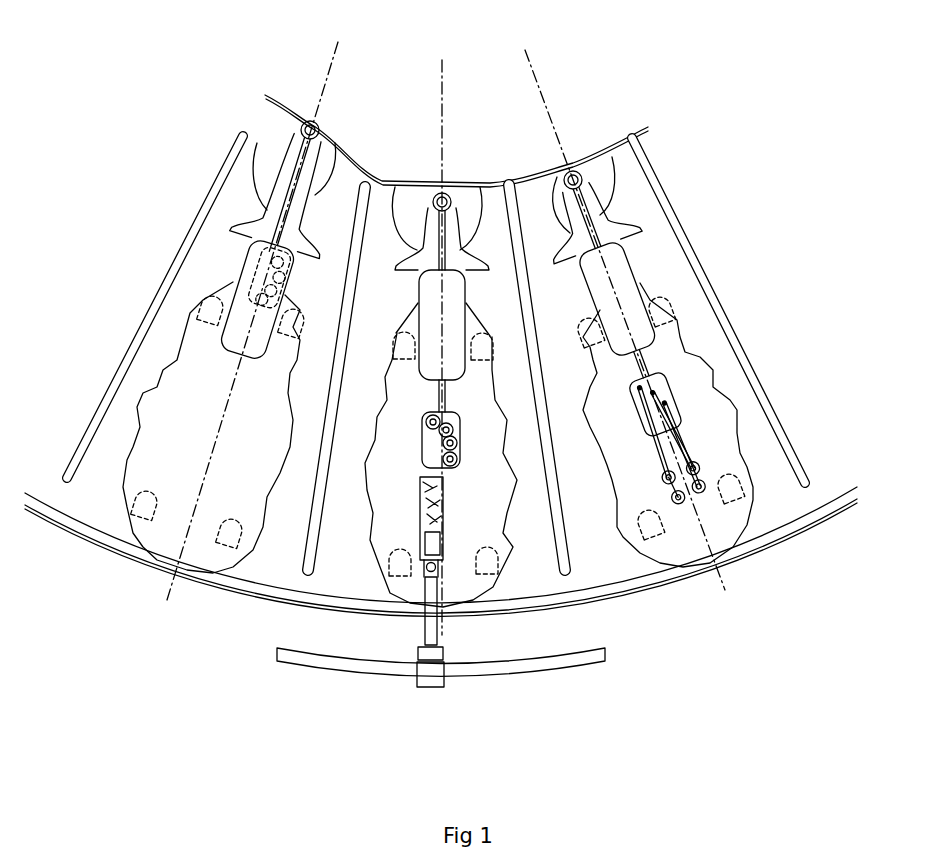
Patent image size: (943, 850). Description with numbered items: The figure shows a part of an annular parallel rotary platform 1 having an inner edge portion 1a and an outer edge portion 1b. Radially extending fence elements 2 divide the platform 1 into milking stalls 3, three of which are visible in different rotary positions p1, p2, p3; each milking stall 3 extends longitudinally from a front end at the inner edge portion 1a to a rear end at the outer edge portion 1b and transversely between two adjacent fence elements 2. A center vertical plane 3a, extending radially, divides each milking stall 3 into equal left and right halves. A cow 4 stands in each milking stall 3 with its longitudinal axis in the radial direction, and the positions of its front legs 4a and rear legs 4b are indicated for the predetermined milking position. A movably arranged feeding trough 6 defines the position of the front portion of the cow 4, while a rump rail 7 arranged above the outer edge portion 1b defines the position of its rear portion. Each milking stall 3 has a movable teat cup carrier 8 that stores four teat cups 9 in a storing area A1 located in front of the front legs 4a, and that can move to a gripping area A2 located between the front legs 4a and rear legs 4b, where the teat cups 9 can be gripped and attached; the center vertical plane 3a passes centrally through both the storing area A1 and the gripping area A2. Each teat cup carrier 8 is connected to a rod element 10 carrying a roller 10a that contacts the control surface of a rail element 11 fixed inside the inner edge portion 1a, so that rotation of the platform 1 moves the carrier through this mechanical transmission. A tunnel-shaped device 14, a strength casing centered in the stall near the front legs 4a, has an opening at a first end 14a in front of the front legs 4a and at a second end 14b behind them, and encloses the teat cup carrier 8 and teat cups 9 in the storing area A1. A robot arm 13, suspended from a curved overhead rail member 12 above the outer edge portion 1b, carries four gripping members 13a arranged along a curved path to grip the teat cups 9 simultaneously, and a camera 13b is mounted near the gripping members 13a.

The rotary platform 1 is at (613, 565).
The inner edge portion 1a is at (525, 180).
The outer edge portion 1b is at (238, 603).
The fence element 2 is at (163, 278).
The milking stall 3 is at (138, 392).
The center vertical plane 3a is at (335, 50).
The cow 4 is at (155, 445).
The front legs 4a is at (212, 313).
The rear legs 4b is at (147, 507).
The feeding trough 6 is at (275, 165).
The rump rail 7 is at (172, 563).
The teat cup carrier 8 is at (280, 293).
The teat cup 9 is at (273, 270).
The rod element 10 is at (288, 203).
The roller 10a is at (322, 124).
The rail element 11 is at (286, 100).
The rail member 12 is at (550, 665).
The robot arm 13 is at (432, 667).
The gripping member 13a is at (443, 493).
The camera 13b is at (432, 542).
The tunnel-shaped device 14 is at (250, 310).
The first end 14a is at (298, 228).
The second end 14b is at (243, 360).
The storing area A1 is at (257, 277).
The gripping area A2 is at (430, 445).
The rotary position p1 is at (103, 503).
The rotary position p2 is at (347, 567).
The rotary position p3 is at (775, 508).